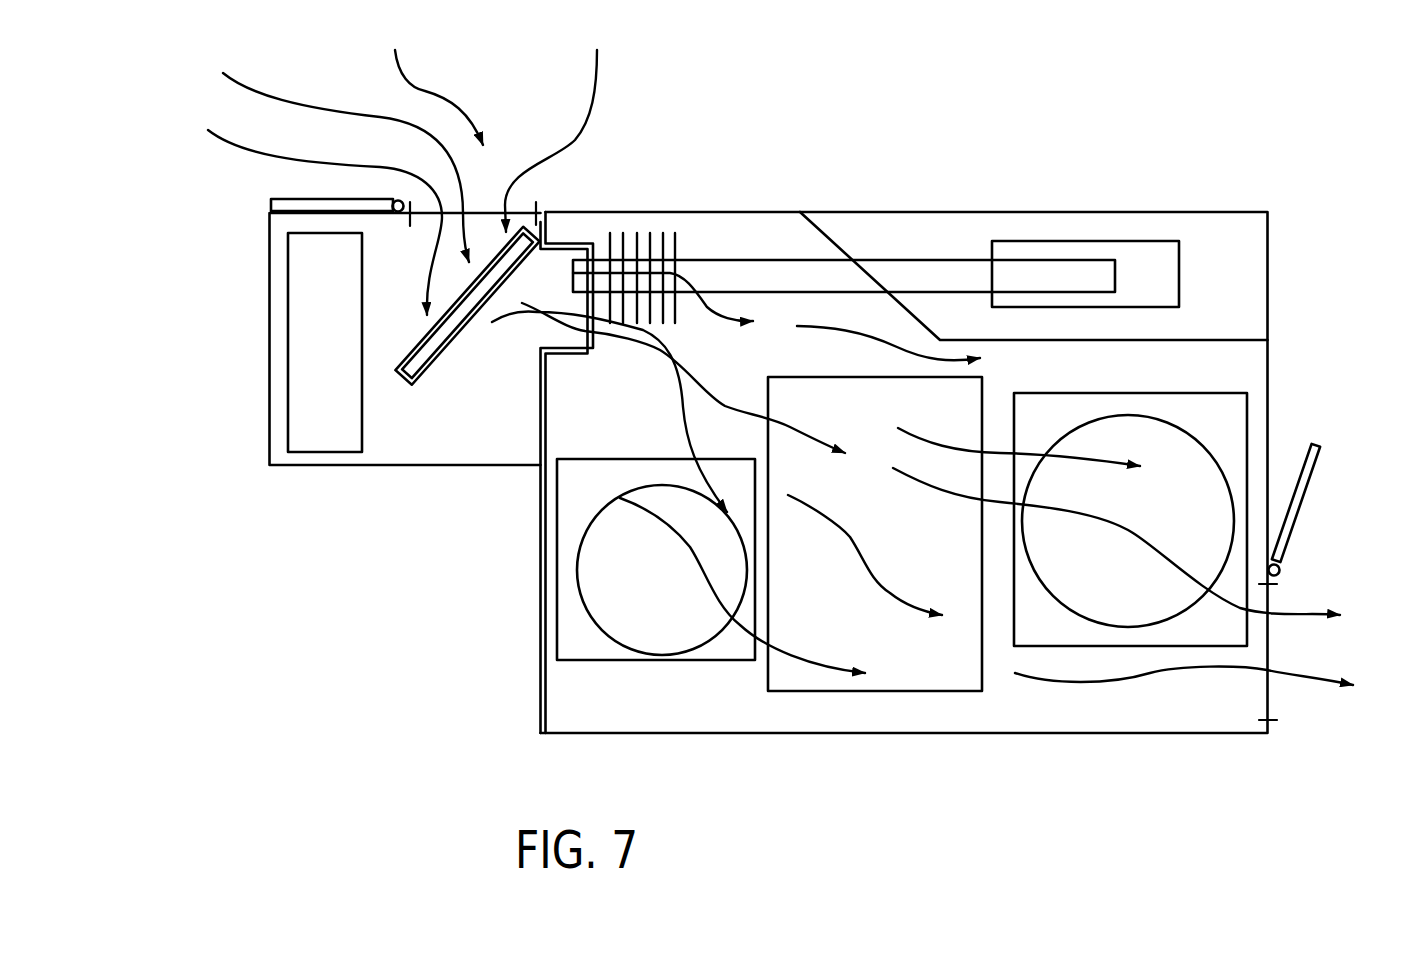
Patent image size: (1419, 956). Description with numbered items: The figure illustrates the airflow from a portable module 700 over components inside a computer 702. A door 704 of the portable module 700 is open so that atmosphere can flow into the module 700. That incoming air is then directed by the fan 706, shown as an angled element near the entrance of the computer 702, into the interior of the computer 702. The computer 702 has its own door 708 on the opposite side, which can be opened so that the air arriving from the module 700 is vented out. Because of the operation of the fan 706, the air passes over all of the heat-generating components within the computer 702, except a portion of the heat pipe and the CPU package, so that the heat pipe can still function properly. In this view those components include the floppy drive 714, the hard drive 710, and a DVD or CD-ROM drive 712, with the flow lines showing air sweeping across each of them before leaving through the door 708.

The portable module 700 is at (314, 573).
The computer 702 is at (622, 720).
The door 704 is at (272, 200).
The fan 706 is at (440, 360).
The door 708 is at (1307, 495).
The hard drive 710 is at (905, 670).
The DVD or CD-ROM drive 712 is at (1058, 630).
The floppy drive 714 is at (577, 637).